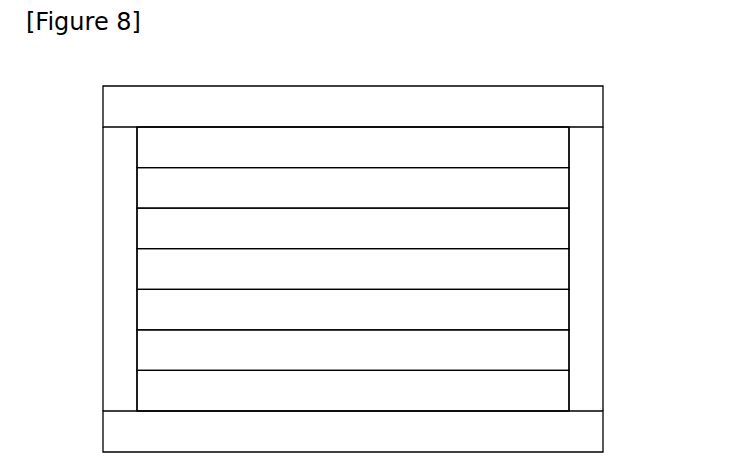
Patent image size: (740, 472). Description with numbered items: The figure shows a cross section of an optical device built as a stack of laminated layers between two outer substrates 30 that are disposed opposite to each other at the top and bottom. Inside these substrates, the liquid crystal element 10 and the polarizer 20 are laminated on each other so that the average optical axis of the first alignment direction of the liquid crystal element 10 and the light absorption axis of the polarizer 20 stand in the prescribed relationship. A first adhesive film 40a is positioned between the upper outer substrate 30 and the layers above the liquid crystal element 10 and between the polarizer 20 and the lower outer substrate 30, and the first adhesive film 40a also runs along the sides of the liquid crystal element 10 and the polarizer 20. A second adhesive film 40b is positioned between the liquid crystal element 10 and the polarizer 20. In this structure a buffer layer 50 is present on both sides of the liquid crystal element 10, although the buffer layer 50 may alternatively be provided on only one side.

The liquid crystal element 10 is at (353, 228).
The polarizer 20 is at (353, 350).
The outer substrate 30 is at (353, 269).
The first adhesive film 40a is at (622, 290).
The second adhesive film 40b is at (353, 309).
The buffer layer 50 is at (353, 229).